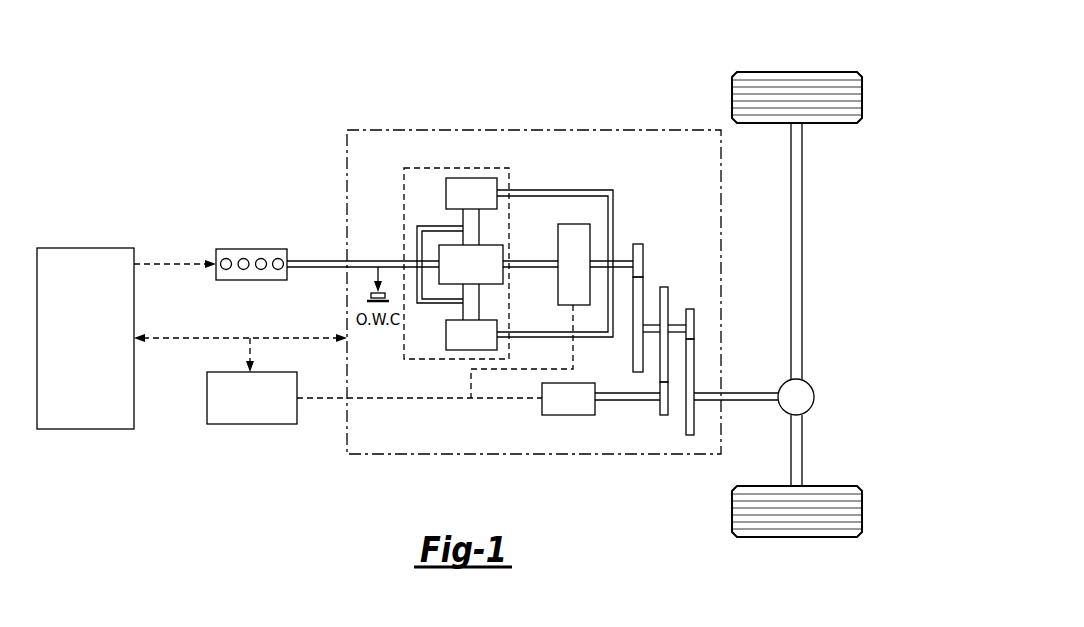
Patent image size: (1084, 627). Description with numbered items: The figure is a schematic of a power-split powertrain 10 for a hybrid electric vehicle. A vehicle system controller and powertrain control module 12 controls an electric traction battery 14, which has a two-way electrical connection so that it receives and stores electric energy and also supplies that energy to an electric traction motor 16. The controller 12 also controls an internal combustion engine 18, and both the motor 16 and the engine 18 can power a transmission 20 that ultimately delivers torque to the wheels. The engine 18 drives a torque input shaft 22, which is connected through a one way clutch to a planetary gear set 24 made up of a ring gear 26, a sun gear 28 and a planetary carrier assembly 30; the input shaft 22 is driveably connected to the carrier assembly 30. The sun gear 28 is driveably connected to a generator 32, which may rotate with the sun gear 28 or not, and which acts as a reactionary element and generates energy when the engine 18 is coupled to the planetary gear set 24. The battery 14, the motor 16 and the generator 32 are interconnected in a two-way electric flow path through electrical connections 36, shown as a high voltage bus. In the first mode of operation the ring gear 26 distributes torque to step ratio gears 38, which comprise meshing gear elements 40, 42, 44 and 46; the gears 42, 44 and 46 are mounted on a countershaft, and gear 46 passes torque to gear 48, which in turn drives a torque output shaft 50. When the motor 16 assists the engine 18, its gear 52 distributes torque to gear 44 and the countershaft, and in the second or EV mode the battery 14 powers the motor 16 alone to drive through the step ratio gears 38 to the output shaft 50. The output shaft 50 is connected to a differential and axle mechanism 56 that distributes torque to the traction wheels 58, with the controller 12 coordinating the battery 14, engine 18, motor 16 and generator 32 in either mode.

The power-split powertrain 10 is at (286, 104).
The vehicle system controller and powertrain control module 12 is at (86, 430).
The electric traction battery 14 is at (257, 424).
The electric traction motor 16 is at (568, 415).
The internal combustion engine 18 is at (216, 249).
The transmission 20 is at (636, 130).
The torque input shaft 22 is at (317, 261).
The planetary gear set 24 is at (509, 168).
The ring gear 26 is at (446, 196).
The sun gear 28 is at (492, 284).
The planetary carrier assembly 30 is at (417, 246).
The generator 32 is at (590, 232).
The electrical connections 36 is at (373, 396).
The step ratio gears 38 is at (708, 259).
The gear element 40 is at (643, 256).
The gear element 42 is at (633, 358).
The gear element 44 is at (668, 296).
The gear element 46 is at (694, 330).
The gear 48 is at (694, 368).
The torque output shaft 50 is at (745, 400).
The gear 52 is at (664, 415).
The differential and axle mechanism 56 is at (814, 397).
The traction wheels 58 is at (797, 72).